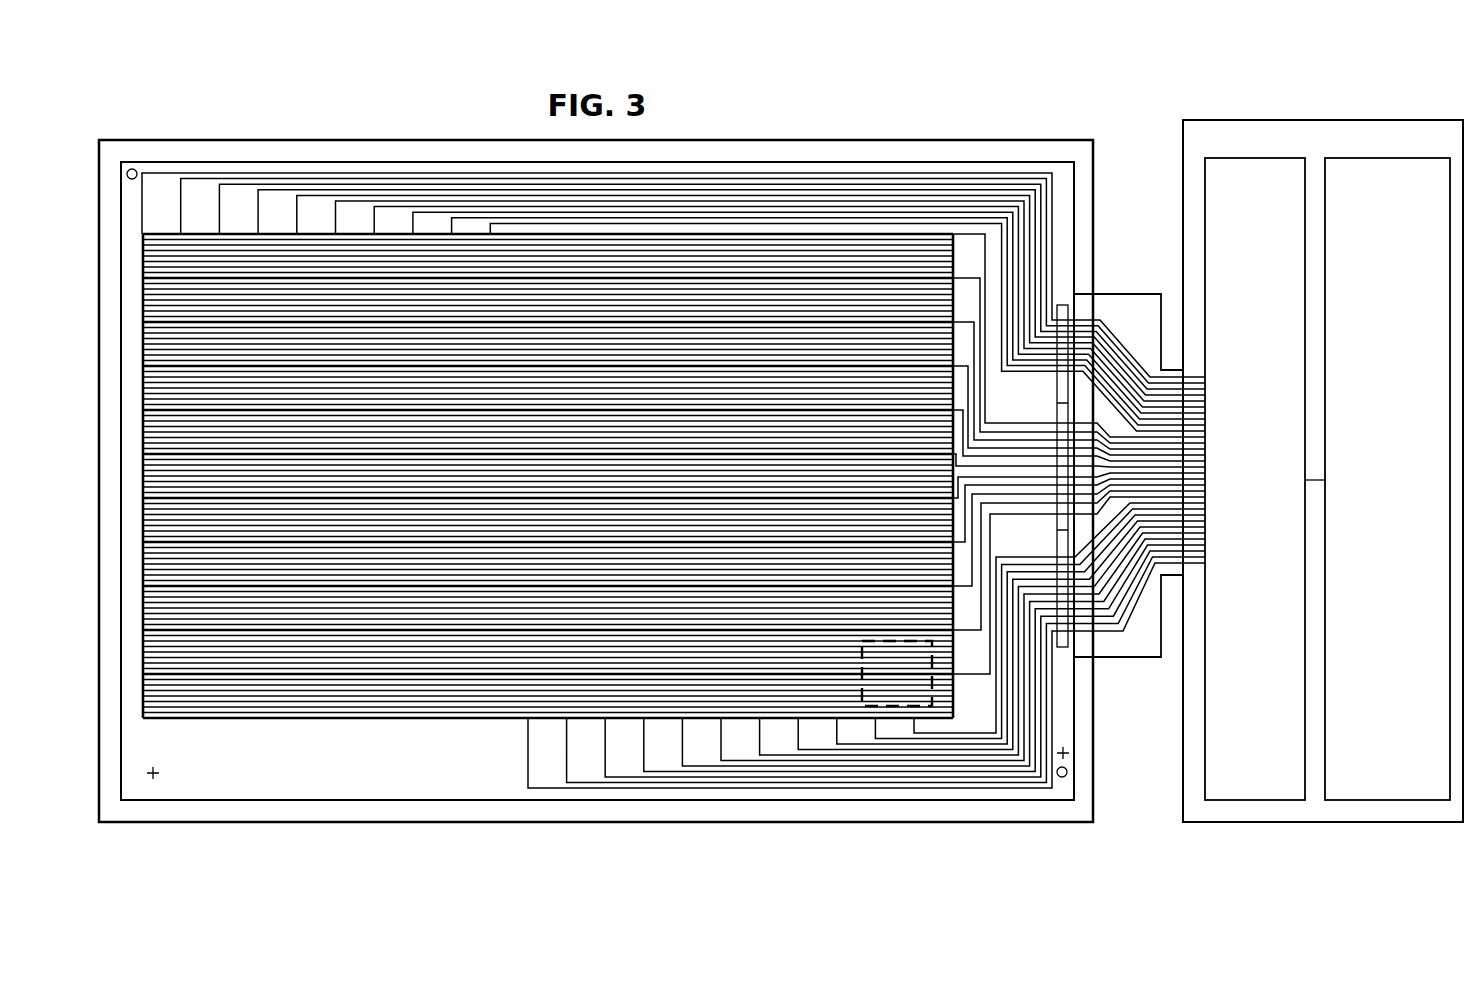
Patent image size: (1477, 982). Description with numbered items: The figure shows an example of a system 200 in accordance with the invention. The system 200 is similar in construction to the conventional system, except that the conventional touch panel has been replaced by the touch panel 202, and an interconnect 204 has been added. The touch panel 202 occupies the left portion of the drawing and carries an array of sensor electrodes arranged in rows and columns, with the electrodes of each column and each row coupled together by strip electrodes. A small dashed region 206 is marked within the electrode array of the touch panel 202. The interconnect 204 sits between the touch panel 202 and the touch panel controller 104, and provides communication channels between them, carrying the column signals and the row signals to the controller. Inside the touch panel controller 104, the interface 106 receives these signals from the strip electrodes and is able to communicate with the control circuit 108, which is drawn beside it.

The system 200 is at (256, 103).
The touch panel 202 is at (432, 140).
The interconnect 204 is at (1120, 294).
The touch node 206 is at (856, 680).
The touch panel controller 104 is at (1386, 110).
The interface 106 is at (1255, 479).
The control circuit 108 is at (1387, 479).